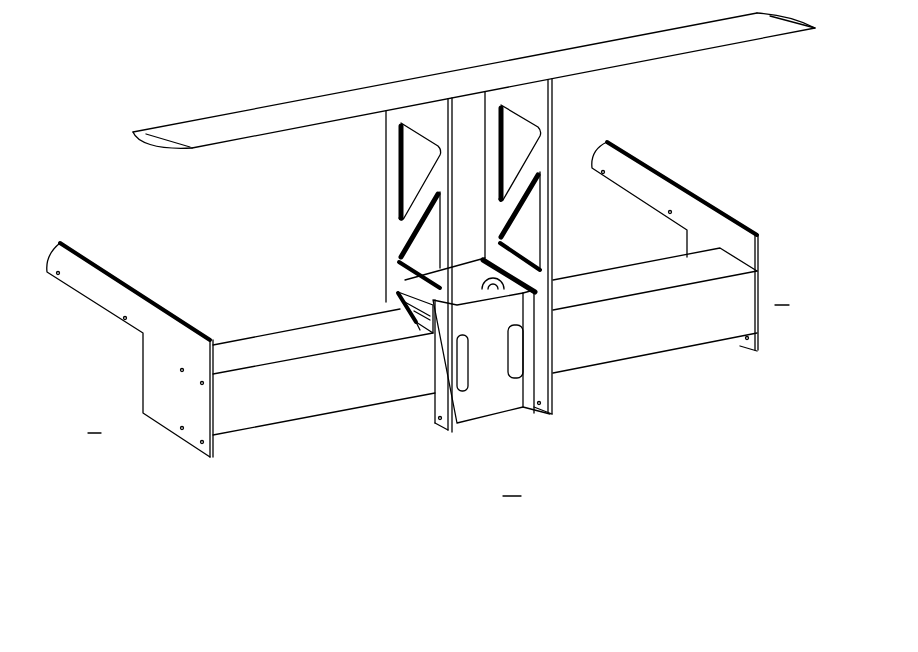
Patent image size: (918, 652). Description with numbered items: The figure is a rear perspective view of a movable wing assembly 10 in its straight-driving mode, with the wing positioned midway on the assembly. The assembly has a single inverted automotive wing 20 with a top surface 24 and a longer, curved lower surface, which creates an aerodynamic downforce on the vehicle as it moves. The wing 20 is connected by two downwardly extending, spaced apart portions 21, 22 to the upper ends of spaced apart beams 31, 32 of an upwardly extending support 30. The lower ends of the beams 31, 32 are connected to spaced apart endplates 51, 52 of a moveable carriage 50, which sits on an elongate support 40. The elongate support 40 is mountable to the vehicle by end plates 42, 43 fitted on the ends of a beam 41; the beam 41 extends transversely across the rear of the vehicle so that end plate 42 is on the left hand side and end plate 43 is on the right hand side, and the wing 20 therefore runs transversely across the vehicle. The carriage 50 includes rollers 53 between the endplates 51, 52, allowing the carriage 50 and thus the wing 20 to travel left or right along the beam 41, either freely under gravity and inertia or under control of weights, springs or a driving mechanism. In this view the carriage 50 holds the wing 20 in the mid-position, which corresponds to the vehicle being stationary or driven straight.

The movable wing assembly 10 is at (88, 86).
The wing 20 is at (333, 57).
The downwardly extending portion 21 is at (407, 118).
The downwardly extending portion 22 is at (557, 91).
The top surface 24 is at (250, 116).
The upwardly extending support 30 is at (368, 208).
The beam 31 is at (395, 244).
The beam 32 is at (545, 152).
The elongate support 40 is at (247, 325).
The beam 41 is at (620, 350).
The end plate 42 is at (107, 297).
The end plate 43 is at (722, 233).
The carriage 50 is at (527, 430).
The endplate 51 is at (477, 411).
The endplate 52 is at (400, 293).
The rollers 53 is at (418, 332).